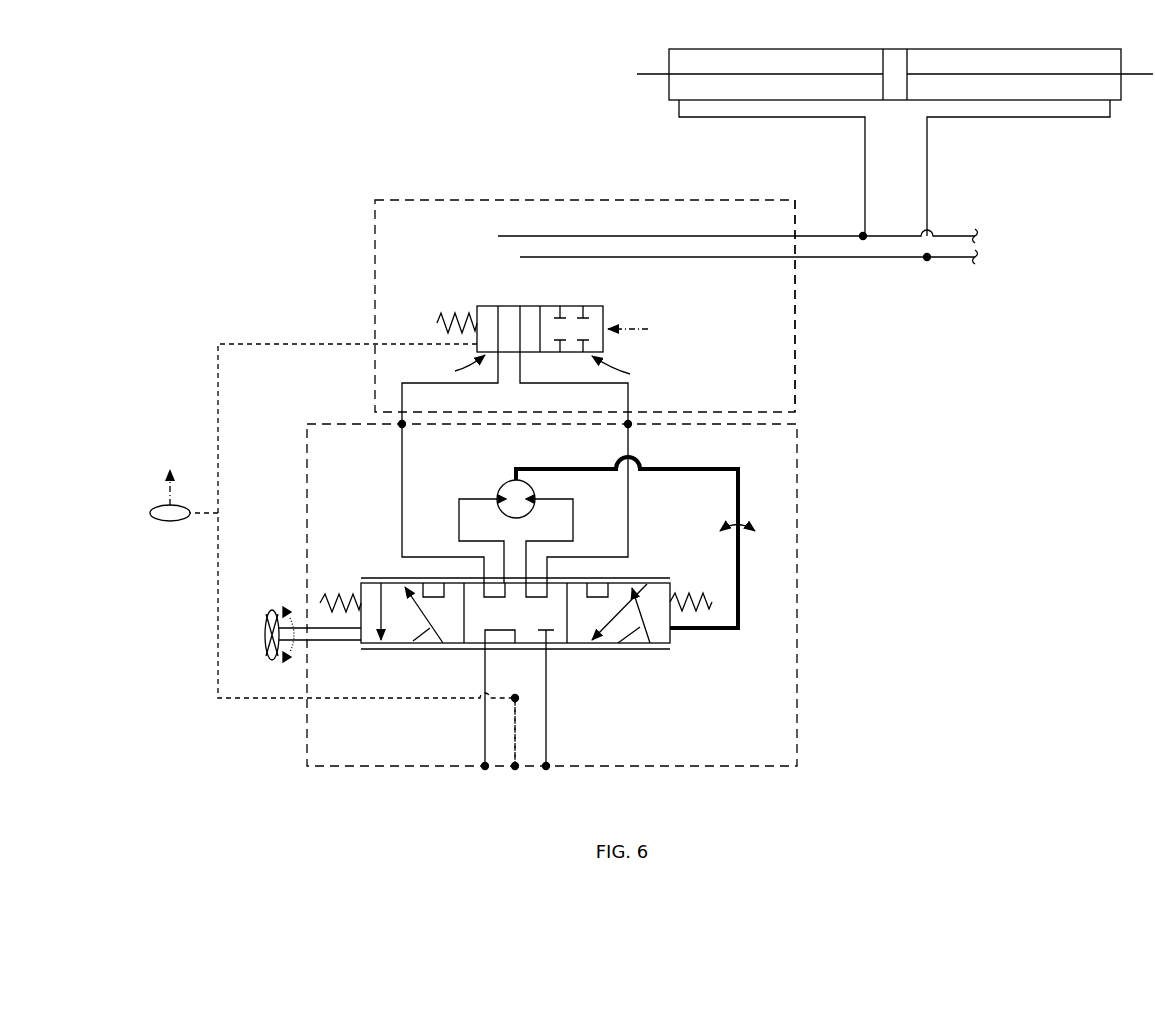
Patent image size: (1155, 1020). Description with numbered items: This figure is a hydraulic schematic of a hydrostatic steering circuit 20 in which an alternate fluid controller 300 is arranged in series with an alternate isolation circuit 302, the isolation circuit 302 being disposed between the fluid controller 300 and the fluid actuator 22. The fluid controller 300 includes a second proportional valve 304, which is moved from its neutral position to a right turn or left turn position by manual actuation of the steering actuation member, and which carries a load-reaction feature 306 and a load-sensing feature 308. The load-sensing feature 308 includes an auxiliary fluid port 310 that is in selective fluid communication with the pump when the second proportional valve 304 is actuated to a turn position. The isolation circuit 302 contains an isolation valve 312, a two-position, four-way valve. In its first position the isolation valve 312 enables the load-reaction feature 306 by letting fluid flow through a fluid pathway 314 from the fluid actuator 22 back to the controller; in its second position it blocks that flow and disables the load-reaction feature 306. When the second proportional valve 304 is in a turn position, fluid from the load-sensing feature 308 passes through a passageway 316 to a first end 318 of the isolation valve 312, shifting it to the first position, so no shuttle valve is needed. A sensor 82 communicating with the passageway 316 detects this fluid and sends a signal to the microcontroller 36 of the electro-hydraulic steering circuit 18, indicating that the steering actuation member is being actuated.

The hydrostatic steering circuit 20 is at (273, 190).
The fluid actuator 22 is at (648, 103).
The electro-hydraulic steering circuit 18 is at (655, 328).
The microcontroller 36 is at (169, 462).
The sensor 82 is at (160, 522).
The fluid controller 300 is at (800, 641).
The isolation circuit 302 is at (798, 327).
The second proportional valve 304 is at (657, 583).
The load-reaction feature 306 is at (485, 605).
The load-sensing feature 308 is at (508, 725).
The auxiliary fluid port 310 is at (514, 769).
The isolation valve 312 is at (541, 305).
The fluid pathway 314 is at (520, 318).
The passageway 316 is at (218, 604).
The first end 318 is at (477, 308).